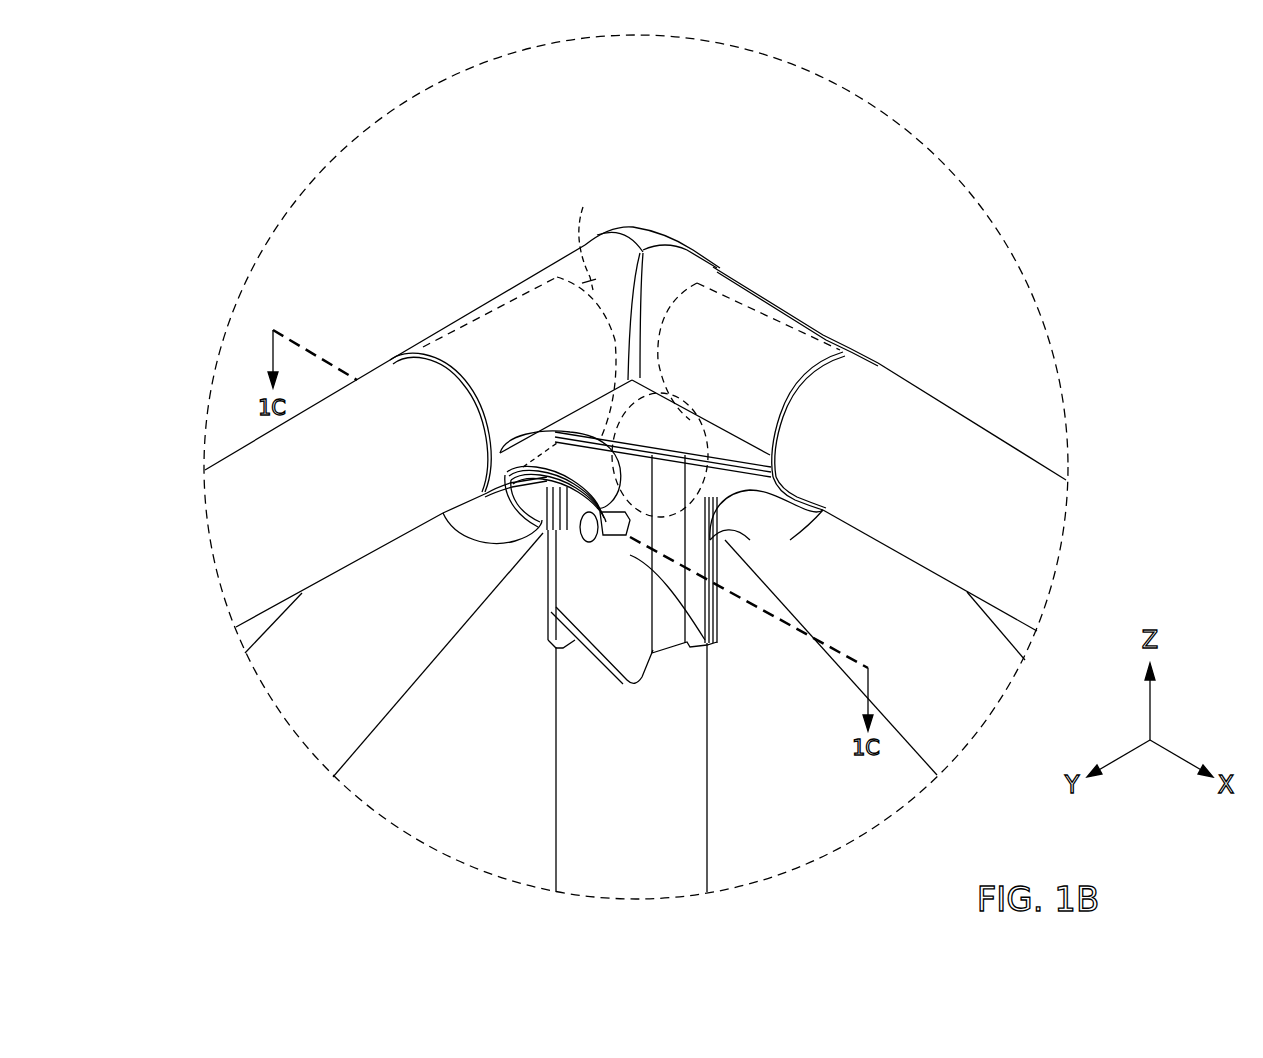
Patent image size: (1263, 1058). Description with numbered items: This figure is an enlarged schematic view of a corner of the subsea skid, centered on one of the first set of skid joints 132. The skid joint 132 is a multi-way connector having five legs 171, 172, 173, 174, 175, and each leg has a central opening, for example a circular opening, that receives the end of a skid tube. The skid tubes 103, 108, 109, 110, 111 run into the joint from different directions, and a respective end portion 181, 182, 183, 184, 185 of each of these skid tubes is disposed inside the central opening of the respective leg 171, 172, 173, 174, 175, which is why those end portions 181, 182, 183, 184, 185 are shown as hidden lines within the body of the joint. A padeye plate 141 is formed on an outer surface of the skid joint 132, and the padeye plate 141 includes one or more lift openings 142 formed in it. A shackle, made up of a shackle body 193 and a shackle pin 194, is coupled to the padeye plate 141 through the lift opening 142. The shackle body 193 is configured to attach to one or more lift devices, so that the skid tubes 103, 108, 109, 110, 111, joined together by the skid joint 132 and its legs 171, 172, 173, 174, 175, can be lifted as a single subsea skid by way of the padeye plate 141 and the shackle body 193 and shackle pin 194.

The skid tube 103 is at (853, 640).
The skid tube 108 is at (370, 687).
The skid tube 109 is at (677, 820).
The skid tube 110 is at (920, 433).
The skid tube 111 is at (400, 387).
The skid joint 132 is at (617, 423).
The padeye plate 141 is at (717, 645).
The lift opening 142 is at (585, 540).
The leg 171 is at (797, 540).
The leg 172 is at (503, 515).
The leg 173 is at (667, 630).
The leg 174 is at (753, 307).
The leg 175 is at (477, 340).
The end portion 181 is at (723, 447).
The end portion 182 is at (584, 358).
The end portion 183 is at (660, 400).
The end portion 184 is at (663, 297).
The end portion 185 is at (590, 237).
The shackle body 193 is at (537, 428).
The shackle pin 194 is at (632, 437).